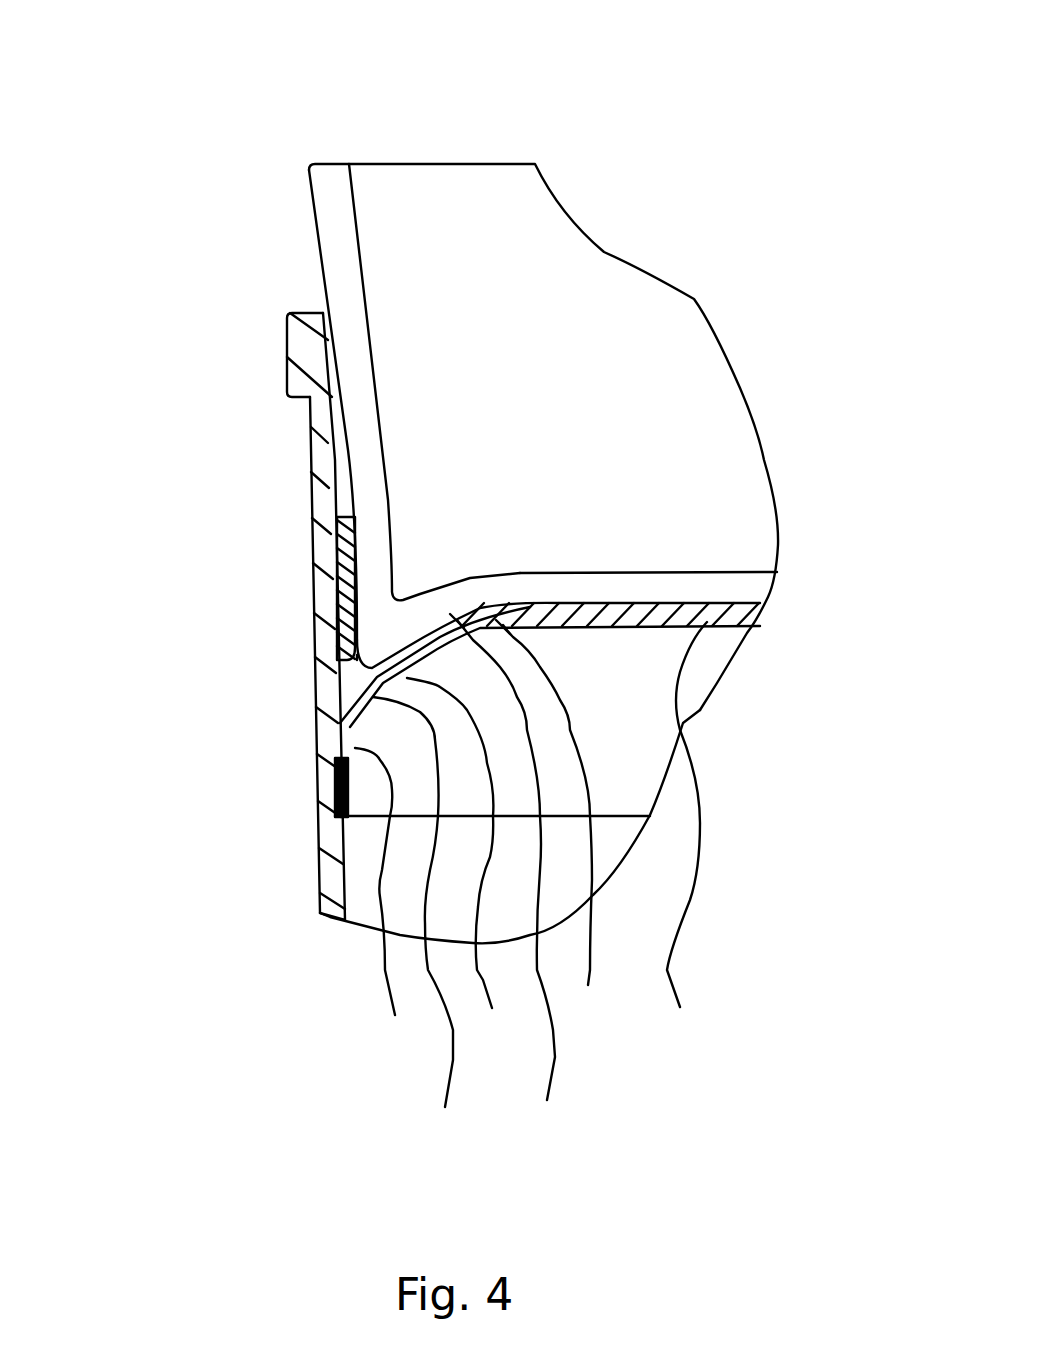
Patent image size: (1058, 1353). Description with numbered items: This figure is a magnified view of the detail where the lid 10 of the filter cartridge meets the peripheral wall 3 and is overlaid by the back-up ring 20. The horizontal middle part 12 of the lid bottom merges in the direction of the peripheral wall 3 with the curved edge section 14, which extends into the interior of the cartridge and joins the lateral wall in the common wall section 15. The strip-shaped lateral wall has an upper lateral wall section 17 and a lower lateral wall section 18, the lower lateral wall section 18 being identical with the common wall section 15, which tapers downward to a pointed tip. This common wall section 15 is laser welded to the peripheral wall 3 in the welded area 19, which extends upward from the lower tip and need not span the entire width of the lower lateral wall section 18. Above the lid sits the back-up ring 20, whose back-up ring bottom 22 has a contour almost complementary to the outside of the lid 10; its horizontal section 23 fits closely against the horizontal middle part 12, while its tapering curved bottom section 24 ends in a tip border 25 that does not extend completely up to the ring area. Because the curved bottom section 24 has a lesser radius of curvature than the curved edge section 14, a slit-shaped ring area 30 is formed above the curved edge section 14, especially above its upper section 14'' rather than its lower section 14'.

The peripheral wall 3 is at (325, 557).
The lid 10 is at (722, 723).
The horizontal middle part 12 is at (682, 839).
The curved edge section 14 is at (510, 872).
The lower section of the curved edge section 14' is at (420, 925).
The upper section of the curved edge section 14'' is at (559, 834).
The common wall section 15 is at (381, 907).
The upper lateral wall section 17 is at (345, 622).
The lower lateral wall section 18 is at (320, 865).
The welded area 19 is at (327, 770).
The back-up ring 20 is at (490, 147).
The back-up ring bottom 22 is at (607, 550).
The horizontal section of the back-up ring bottom 23 is at (697, 588).
The curved bottom section 24 is at (470, 593).
The tip border 25 is at (377, 648).
The slit-shaped ring area 30 is at (509, 884).